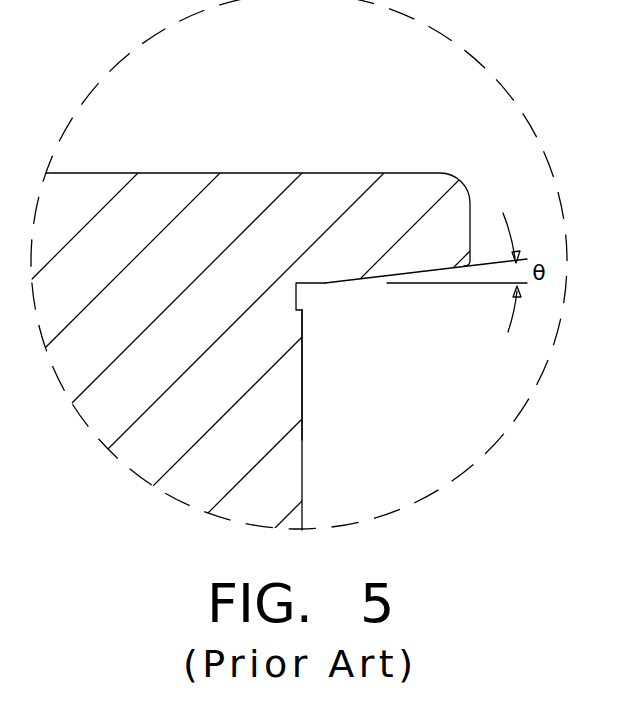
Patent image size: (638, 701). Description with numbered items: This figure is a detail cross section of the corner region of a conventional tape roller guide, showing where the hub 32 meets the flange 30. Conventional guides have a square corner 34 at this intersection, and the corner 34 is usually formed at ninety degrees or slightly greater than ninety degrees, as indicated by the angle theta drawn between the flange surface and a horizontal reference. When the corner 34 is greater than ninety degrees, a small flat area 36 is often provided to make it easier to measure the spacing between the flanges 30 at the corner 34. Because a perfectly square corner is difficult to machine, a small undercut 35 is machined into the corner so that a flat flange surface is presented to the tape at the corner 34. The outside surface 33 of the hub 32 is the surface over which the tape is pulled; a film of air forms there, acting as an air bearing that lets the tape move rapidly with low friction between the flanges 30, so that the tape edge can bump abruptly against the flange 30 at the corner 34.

The flange 30 is at (431, 181).
The hub 32 is at (293, 478).
The outside surface 33 is at (302, 432).
The square corner 34 is at (333, 320).
The undercut 35 is at (300, 292).
The flat area 36 is at (320, 283).